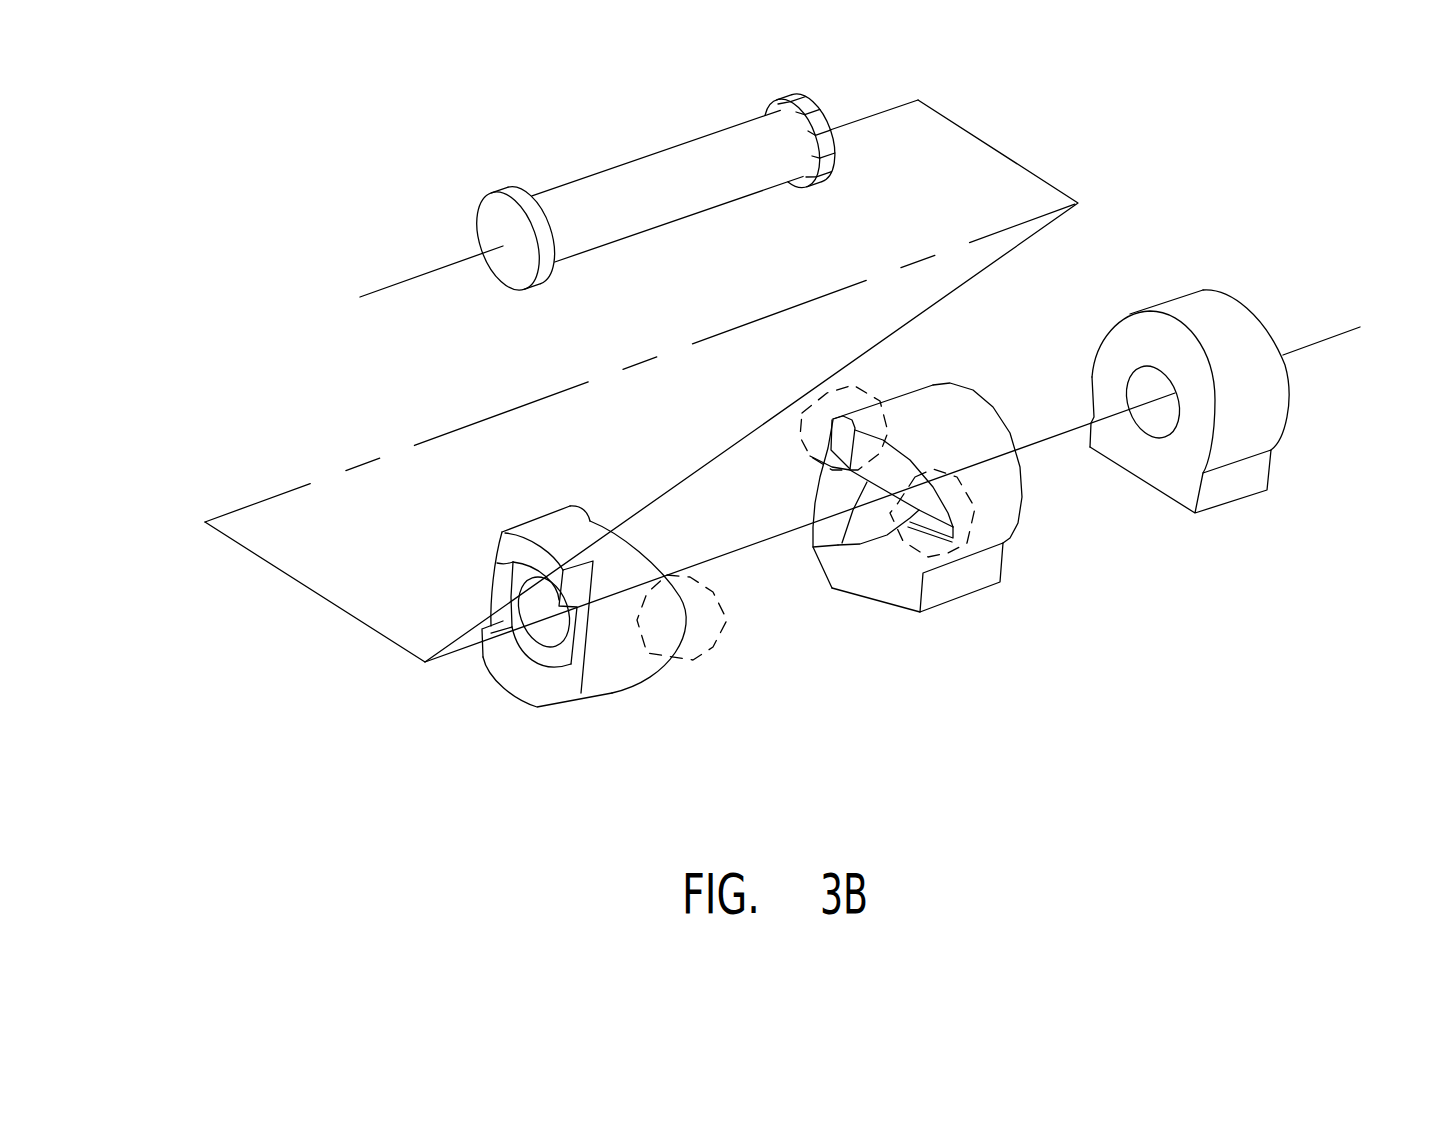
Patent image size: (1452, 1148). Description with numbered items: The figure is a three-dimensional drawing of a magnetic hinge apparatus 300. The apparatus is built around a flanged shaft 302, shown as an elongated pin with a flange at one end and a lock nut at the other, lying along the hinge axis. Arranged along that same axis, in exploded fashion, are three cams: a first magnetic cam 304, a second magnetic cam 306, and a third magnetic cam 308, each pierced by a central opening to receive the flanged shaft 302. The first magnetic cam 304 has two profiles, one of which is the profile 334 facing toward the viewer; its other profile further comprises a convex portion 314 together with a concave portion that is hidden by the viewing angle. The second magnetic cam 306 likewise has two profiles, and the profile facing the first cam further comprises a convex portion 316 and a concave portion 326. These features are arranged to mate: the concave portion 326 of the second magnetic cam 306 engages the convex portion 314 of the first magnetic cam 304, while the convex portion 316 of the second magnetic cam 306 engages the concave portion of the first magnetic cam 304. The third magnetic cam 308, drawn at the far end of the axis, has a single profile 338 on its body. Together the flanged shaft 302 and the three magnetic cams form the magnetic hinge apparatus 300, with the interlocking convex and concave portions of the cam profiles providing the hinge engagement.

The magnetic hinge apparatus 300 is at (1248, 736).
The flanged shaft 302 is at (660, 182).
The first magnetic cam 304 is at (574, 607).
The second magnetic cam 306 is at (916, 504).
The third magnetic cam 308 is at (1207, 425).
The convex portion 314 is at (667, 623).
The convex portion 316 is at (835, 420).
The concave portion 326 is at (950, 542).
The profile 334 is at (552, 650).
The profile 338 is at (1170, 470).